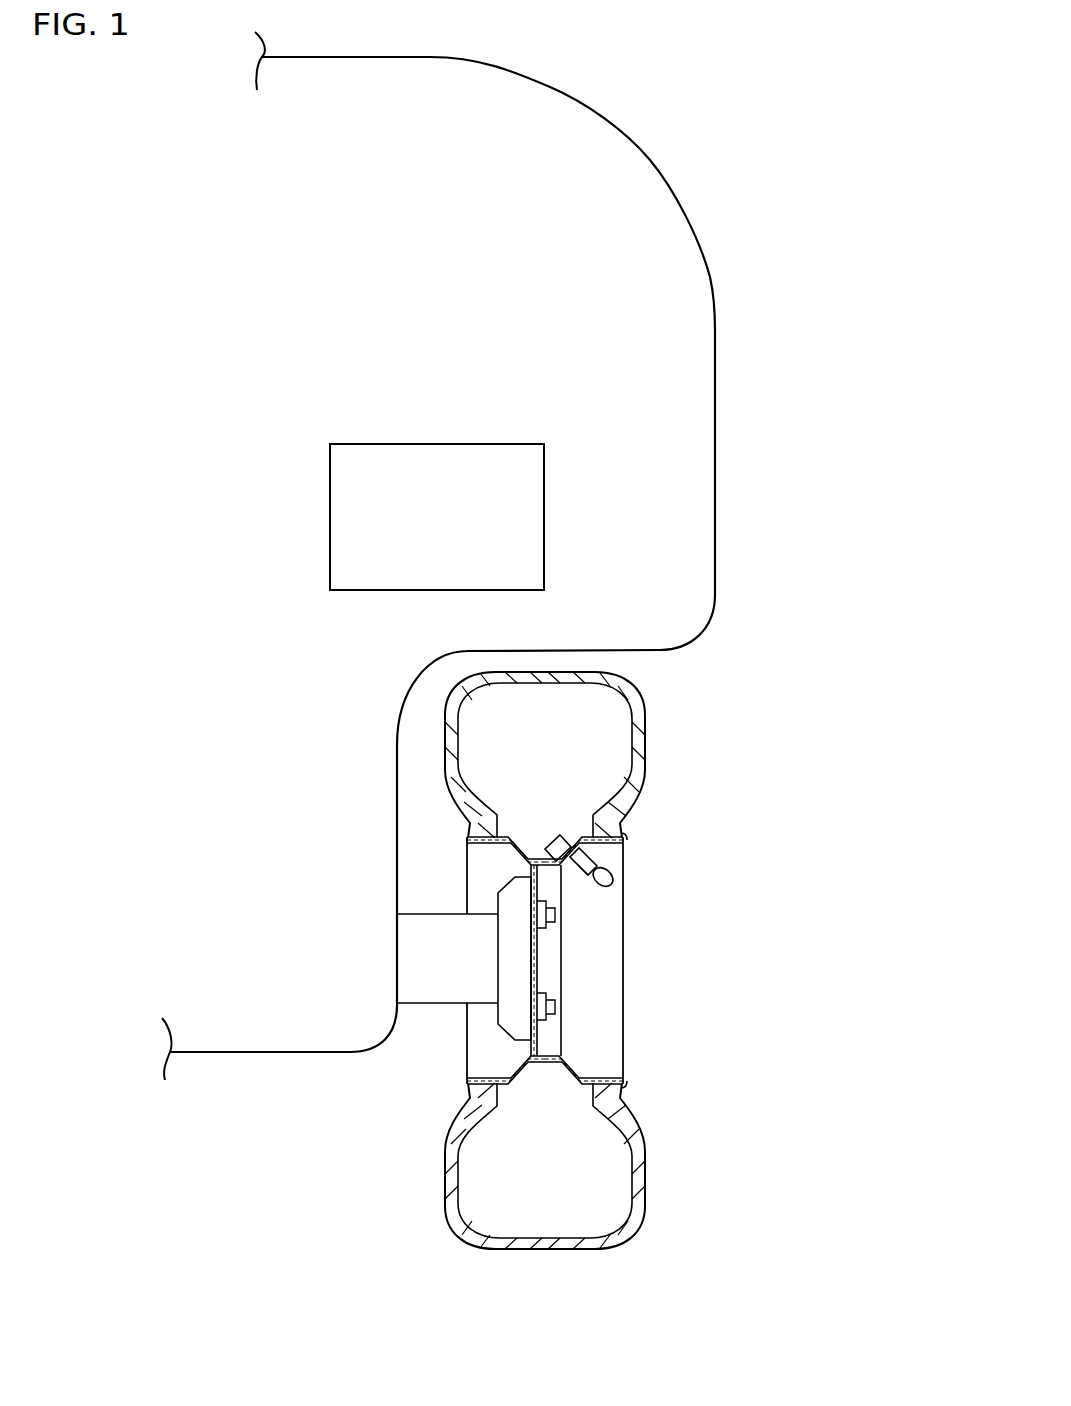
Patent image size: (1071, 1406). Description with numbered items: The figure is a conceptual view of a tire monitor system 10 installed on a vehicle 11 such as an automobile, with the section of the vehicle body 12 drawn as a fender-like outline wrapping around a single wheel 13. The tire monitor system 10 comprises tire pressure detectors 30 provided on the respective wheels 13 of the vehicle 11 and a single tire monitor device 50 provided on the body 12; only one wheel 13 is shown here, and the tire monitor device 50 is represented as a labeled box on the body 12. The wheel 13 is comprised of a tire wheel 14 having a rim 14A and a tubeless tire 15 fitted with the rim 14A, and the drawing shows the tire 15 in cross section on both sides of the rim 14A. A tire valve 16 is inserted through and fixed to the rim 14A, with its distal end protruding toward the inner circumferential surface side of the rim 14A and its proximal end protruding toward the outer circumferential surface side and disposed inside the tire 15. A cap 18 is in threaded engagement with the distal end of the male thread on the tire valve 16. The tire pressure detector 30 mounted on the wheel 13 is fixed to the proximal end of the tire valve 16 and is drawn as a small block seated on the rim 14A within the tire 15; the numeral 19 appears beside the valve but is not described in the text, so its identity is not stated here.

The vehicle 11 is at (499, 556).
The body 12 is at (716, 462).
The tire monitor system 10 is at (583, 652).
The tire monitor device 50 is at (559, 574).
The tire pressure detector 30 is at (562, 832).
The wheel 13 is at (633, 960).
The tire wheel 14 is at (619, 960).
The rim 14A is at (607, 847).
The tubeless tire 15 is at (648, 1134).
The tire valve 16 is at (585, 875).
The cap 18 is at (613, 880).
The valve hole 19 is at (592, 883).